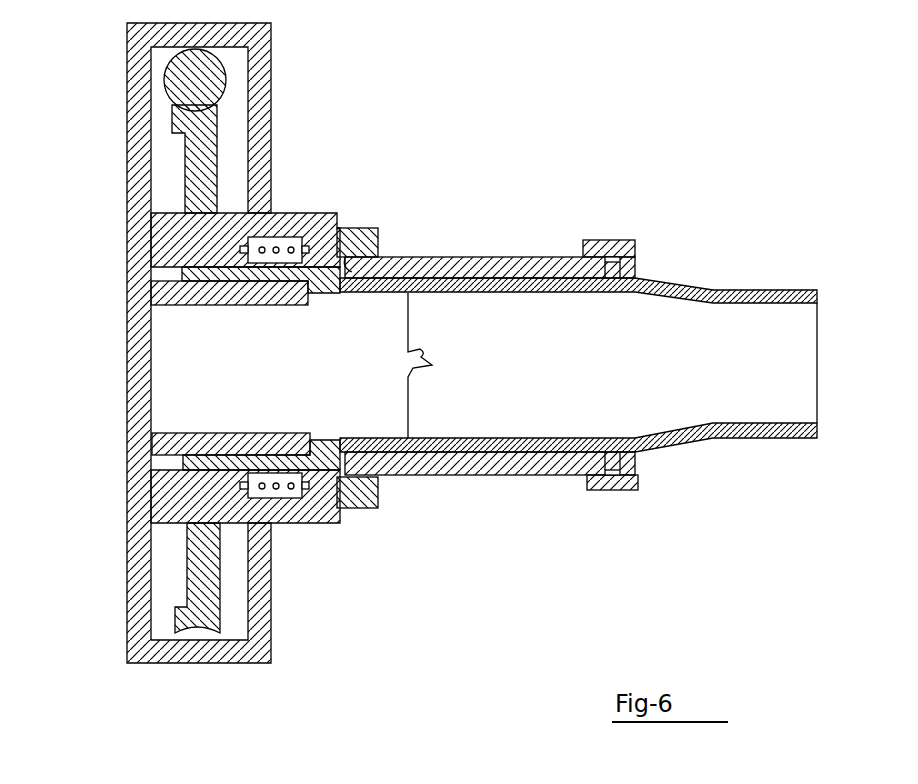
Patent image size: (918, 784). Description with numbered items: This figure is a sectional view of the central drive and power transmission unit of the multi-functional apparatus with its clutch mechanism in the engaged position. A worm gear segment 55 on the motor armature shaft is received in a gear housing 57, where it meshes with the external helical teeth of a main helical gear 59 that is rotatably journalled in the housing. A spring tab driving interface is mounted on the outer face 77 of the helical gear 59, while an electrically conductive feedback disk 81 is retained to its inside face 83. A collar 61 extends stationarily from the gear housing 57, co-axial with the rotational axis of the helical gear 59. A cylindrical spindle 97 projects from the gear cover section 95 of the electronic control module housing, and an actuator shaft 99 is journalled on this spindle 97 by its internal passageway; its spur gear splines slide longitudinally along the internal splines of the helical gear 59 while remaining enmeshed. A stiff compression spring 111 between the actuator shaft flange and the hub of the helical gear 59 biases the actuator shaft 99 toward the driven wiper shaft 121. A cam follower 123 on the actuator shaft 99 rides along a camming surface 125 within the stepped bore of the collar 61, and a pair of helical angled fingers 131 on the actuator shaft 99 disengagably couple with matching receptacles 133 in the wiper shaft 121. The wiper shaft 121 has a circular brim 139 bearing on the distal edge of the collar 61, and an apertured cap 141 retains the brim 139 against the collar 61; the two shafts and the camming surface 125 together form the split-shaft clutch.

The worm gear segment 55 is at (187, 75).
The gear housing 57 is at (258, 123).
The main helical gear 59 is at (208, 167).
The collar 61 is at (535, 260).
The outer face 77 is at (220, 578).
The feedback disk 81 is at (130, 192).
The inside face 83 is at (187, 572).
The gear cover section 95 is at (140, 368).
The cylindrical spindle 97 is at (248, 292).
The actuator shaft 99 is at (265, 450).
The compression spring 111 is at (278, 247).
The wiper shaft 121 is at (602, 340).
The cam follower 123 is at (358, 272).
The camming surface 125 is at (355, 272).
The angled fingers 131 is at (415, 368).
The receptacles 133 is at (425, 352).
The circular brim 139 is at (622, 467).
The cap 141 is at (617, 243).